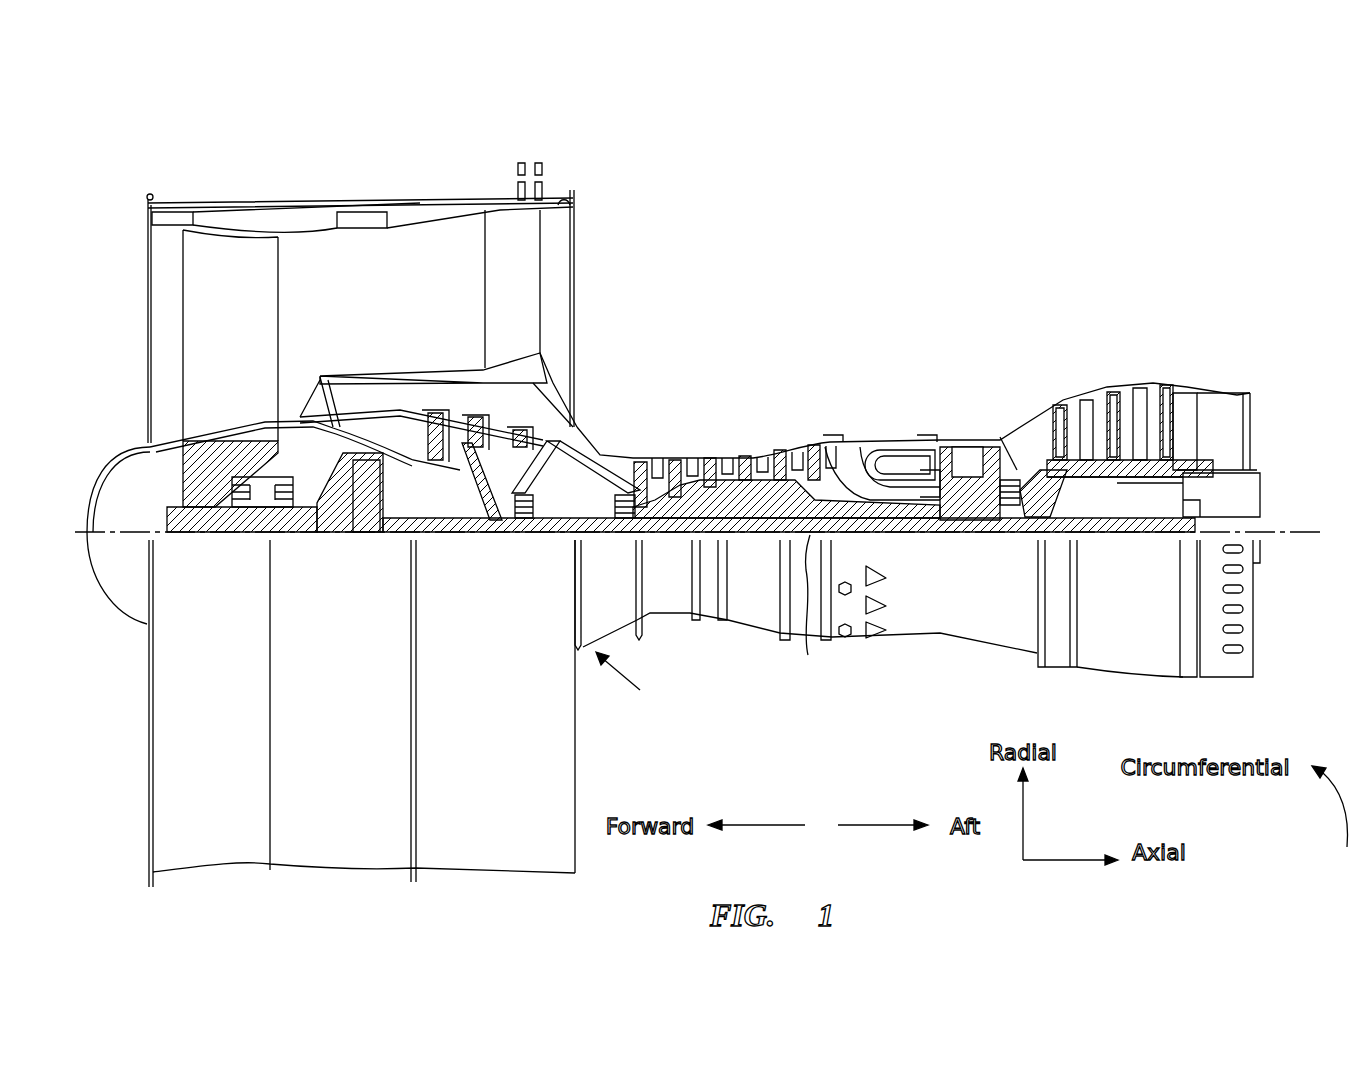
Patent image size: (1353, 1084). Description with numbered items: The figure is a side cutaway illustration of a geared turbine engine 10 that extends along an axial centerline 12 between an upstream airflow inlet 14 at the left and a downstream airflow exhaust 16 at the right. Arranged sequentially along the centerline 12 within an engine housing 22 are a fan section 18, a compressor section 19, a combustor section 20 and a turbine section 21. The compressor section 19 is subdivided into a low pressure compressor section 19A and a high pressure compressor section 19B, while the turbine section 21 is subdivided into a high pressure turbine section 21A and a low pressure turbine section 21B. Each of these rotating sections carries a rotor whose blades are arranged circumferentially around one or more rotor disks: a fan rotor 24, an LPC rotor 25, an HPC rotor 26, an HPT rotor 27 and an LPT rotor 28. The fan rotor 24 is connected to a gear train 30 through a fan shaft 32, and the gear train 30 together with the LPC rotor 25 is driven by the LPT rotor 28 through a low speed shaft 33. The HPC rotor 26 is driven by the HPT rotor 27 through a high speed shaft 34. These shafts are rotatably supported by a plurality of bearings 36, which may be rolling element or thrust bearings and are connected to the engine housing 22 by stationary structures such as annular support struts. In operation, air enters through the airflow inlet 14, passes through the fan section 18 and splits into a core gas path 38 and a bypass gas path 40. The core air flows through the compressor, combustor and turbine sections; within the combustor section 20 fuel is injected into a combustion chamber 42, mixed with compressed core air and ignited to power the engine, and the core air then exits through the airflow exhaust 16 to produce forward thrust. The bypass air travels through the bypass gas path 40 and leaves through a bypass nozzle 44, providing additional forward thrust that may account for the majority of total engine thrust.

The geared turbine engine 10 is at (110, 174).
The axial centerline 12 is at (1314, 542).
The upstream airflow inlet 14 is at (146, 280).
The downstream airflow exhaust 16 is at (1263, 425).
The fan section 18 is at (328, 175).
The compressor section 19 is at (805, 112).
The low pressure compressor section 19A is at (575, 167).
The high pressure compressor section 19B is at (602, 360).
The combustor section 20 is at (935, 360).
The turbine section 21 is at (940, 287).
The high pressure turbine section 21A is at (1018, 359).
The low pressure turbine section 21B is at (1208, 359).
The engine housing 22 is at (630, 685).
The fan rotor 24 is at (157, 440).
The LPC rotor 25 is at (480, 482).
The HPC rotor 26 is at (748, 483).
The HPT rotor 27 is at (967, 538).
The LPT rotor 28 is at (1117, 485).
The gear train 30 is at (362, 538).
The fan shaft 32 is at (220, 538).
The low speed shaft 33 is at (805, 609).
The high speed shaft 34 is at (890, 502).
The bearings 36 is at (258, 512).
The core gas path 38 is at (597, 456).
The bypass gas path 40 is at (416, 296).
The combustion chamber 42 is at (890, 468).
The bypass nozzle 44 is at (588, 263).